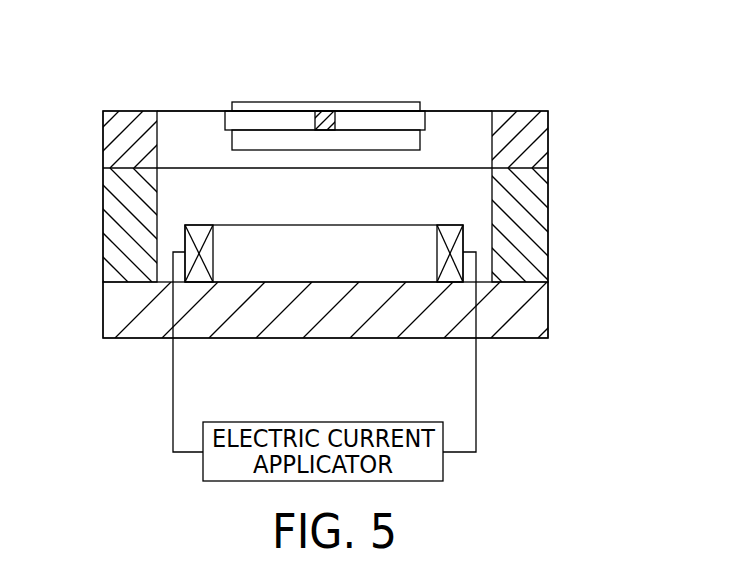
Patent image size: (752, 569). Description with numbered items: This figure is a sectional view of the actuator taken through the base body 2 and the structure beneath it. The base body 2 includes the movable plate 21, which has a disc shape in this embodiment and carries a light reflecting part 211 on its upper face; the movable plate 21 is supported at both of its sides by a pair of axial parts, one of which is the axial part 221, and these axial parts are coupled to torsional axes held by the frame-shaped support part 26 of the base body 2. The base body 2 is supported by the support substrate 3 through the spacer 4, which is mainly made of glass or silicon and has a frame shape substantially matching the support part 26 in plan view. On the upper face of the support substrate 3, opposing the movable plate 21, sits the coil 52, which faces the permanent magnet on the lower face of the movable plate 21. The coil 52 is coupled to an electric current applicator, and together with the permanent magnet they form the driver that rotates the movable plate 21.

The base body 2 is at (566, 135).
The support substrate 3 is at (117, 312).
The spacer 4 is at (533, 234).
The movable plate 21 is at (373, 122).
The magnet top plate 211 is at (247, 106).
The axial part 221 is at (325, 120).
The support part 26 is at (117, 143).
The coil 52 is at (289, 262).